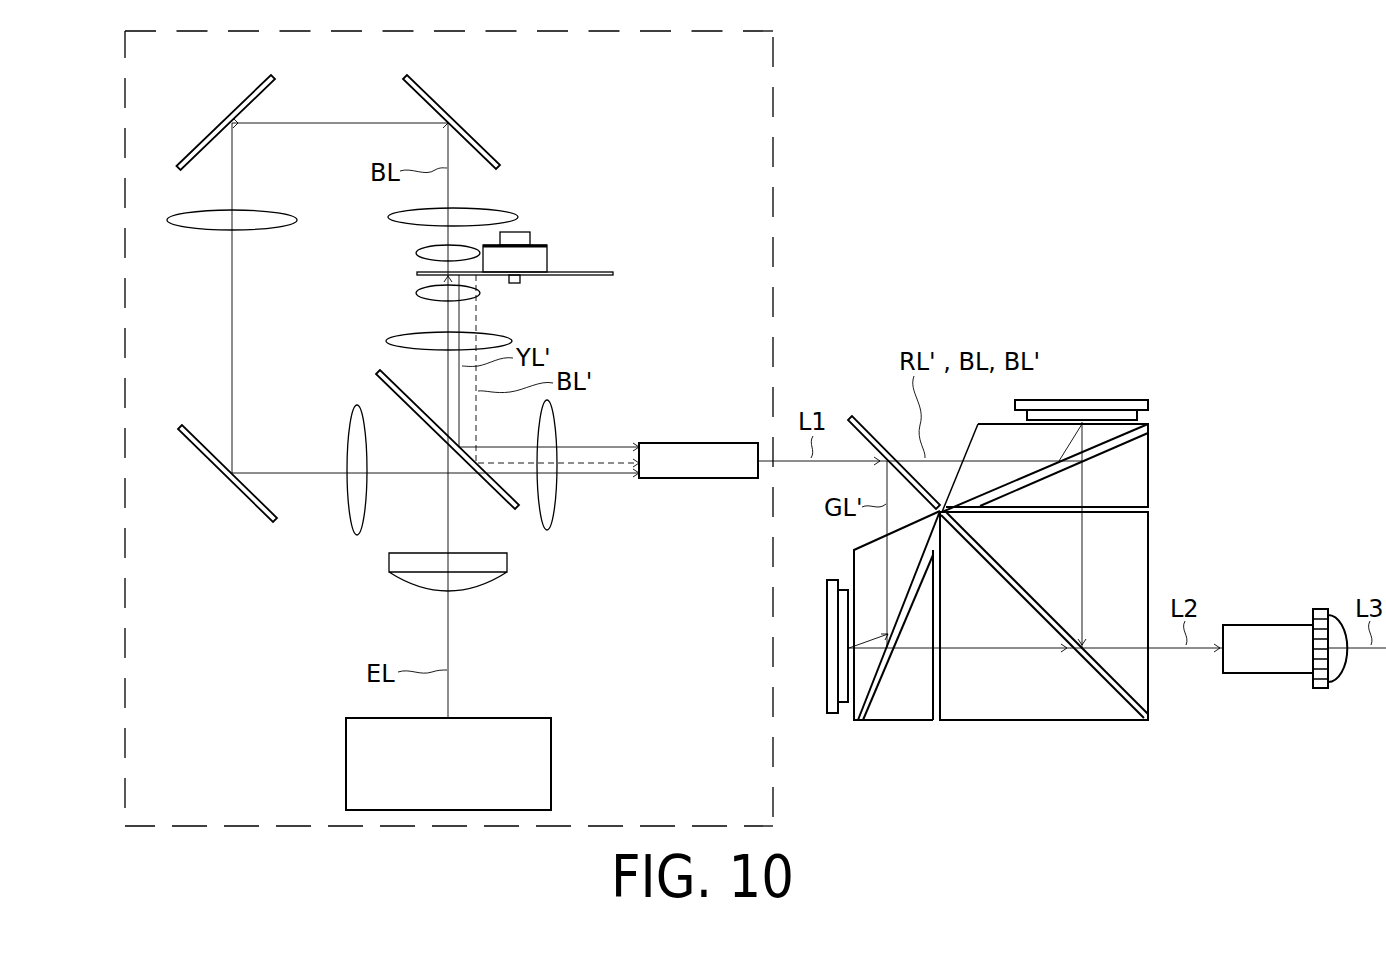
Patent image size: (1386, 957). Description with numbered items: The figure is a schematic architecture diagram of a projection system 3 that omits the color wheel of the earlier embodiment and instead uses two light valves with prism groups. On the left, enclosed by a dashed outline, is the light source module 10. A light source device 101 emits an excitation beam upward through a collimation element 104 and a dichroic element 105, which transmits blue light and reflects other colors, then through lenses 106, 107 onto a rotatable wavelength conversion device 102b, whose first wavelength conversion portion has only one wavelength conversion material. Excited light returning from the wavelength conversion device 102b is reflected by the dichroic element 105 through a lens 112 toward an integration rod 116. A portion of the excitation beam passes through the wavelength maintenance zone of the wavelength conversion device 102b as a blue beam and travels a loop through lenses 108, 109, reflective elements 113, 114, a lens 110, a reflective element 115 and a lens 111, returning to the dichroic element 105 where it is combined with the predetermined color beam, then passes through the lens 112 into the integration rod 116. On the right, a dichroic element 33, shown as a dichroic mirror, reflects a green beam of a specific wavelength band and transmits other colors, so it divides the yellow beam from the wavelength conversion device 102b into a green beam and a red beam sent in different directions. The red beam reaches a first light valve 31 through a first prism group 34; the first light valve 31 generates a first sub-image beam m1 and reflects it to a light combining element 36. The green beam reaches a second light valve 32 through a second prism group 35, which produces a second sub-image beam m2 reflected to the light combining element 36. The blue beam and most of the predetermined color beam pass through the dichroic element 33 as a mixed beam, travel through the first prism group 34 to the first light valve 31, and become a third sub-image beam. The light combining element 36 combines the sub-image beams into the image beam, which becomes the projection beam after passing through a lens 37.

The light source module 10 is at (125, 397).
The projection system 3 is at (84, 78).
The light source device 101 is at (350, 760).
The wavelength conversion device 102b is at (613, 273).
The collimation element 104 is at (400, 565).
The dichroic element 105 is at (516, 512).
The lens 106 is at (494, 342).
The lens 107 is at (418, 293).
The lens 108 is at (460, 252).
The lens 109 is at (478, 213).
The lens 110 is at (192, 221).
The lens 111 is at (356, 429).
The lens 112 is at (548, 510).
The reflective element 113 is at (431, 102).
The reflective element 114 is at (247, 105).
The reflective element 115 is at (243, 489).
The integration rod 116 is at (697, 470).
The first light valve 31 is at (1120, 403).
The second light valve 32 is at (833, 690).
The dichroic element 33 is at (878, 452).
The first prism group 34 is at (1160, 457).
The second prism group 35 is at (890, 735).
The light combining element 36 is at (1088, 722).
The lens 37 is at (1267, 674).
The first sub-image beam m1 is at (1083, 538).
The second sub-image beam m2 is at (1012, 650).